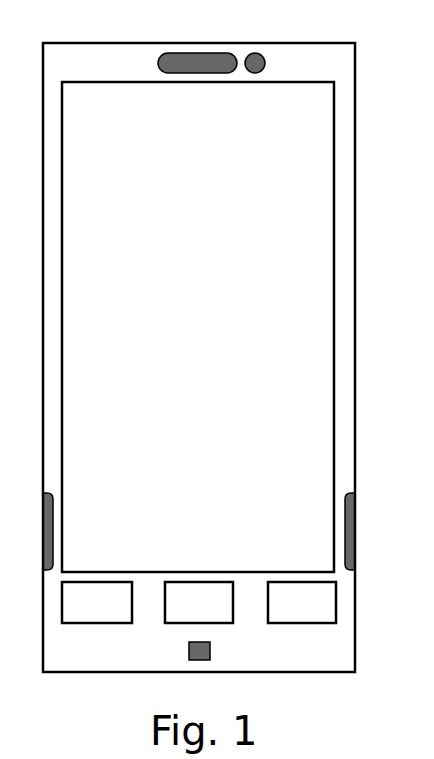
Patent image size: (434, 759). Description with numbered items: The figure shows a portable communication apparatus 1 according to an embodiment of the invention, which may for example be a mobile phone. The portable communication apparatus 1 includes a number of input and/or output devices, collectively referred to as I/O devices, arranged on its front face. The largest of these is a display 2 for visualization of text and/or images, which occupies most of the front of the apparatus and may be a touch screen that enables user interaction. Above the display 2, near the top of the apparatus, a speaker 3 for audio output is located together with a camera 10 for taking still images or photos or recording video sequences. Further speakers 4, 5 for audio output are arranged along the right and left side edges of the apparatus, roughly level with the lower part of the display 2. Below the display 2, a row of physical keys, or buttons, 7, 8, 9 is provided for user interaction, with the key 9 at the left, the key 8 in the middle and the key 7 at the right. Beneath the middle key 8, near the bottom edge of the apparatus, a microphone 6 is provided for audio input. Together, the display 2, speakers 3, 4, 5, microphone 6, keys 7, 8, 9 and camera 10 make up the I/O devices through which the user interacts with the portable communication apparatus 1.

The portable communication apparatus 1 is at (355, 62).
The display 2 is at (314, 347).
The speaker 3 is at (193, 62).
The speaker 4 is at (357, 513).
The speaker 5 is at (46, 530).
The microphone 6 is at (207, 657).
The physical key 7 is at (307, 601).
The physical key 8 is at (178, 612).
The physical key 9 is at (73, 601).
The camera 10 is at (260, 60).